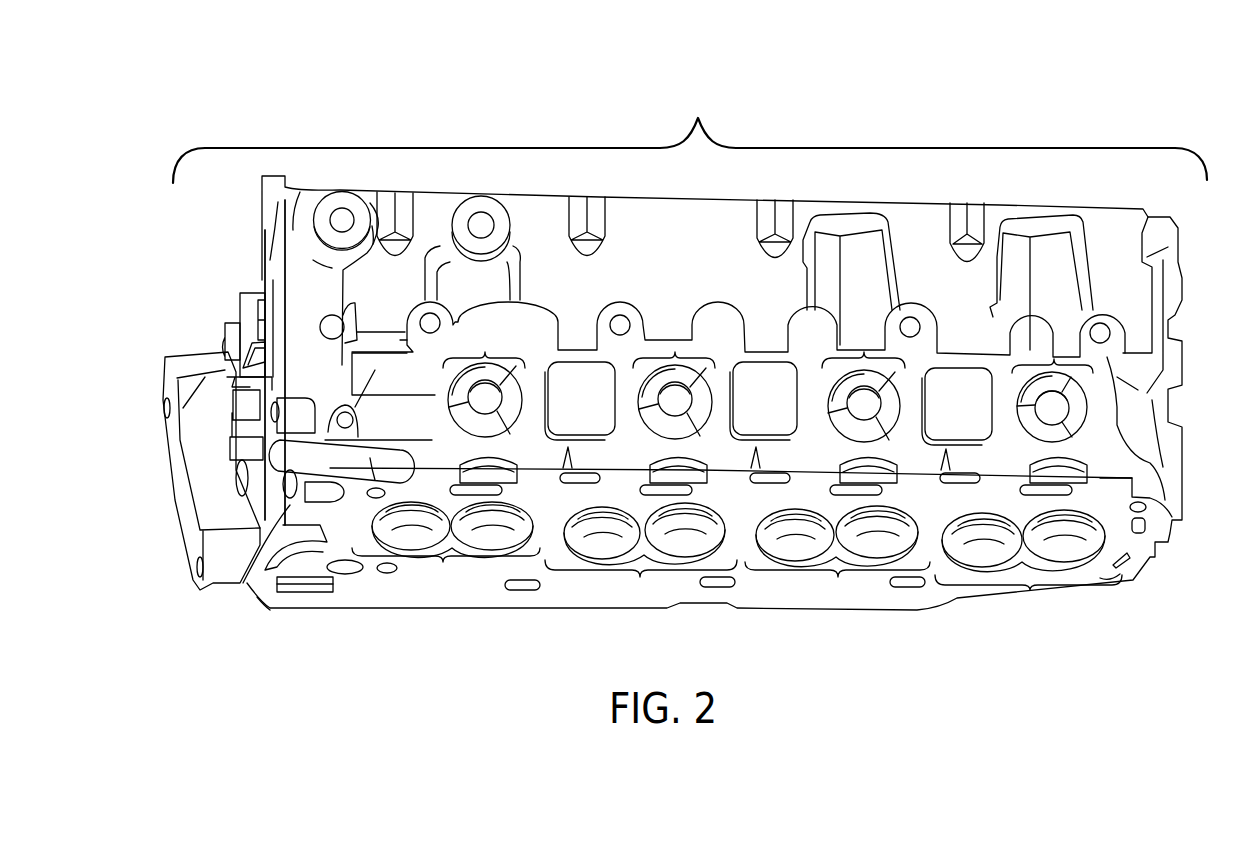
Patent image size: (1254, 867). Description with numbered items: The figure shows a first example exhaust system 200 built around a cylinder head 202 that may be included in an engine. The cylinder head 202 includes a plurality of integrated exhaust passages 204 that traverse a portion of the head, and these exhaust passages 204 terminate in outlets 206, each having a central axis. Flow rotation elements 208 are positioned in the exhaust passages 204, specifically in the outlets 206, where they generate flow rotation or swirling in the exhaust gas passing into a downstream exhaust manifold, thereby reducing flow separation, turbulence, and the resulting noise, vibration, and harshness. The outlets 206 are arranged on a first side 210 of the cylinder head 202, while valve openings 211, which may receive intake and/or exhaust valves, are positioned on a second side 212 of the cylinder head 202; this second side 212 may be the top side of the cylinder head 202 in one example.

The exhaust system 200 is at (116, 91).
The cylinder head 202 is at (672, 347).
The integrated exhaust passages 204 is at (452, 395).
The outlets 206 is at (503, 328).
The flow rotation elements 208 is at (513, 397).
The first side 210 is at (302, 298).
The valve openings 211 is at (737, 564).
The second side 212 is at (322, 557).